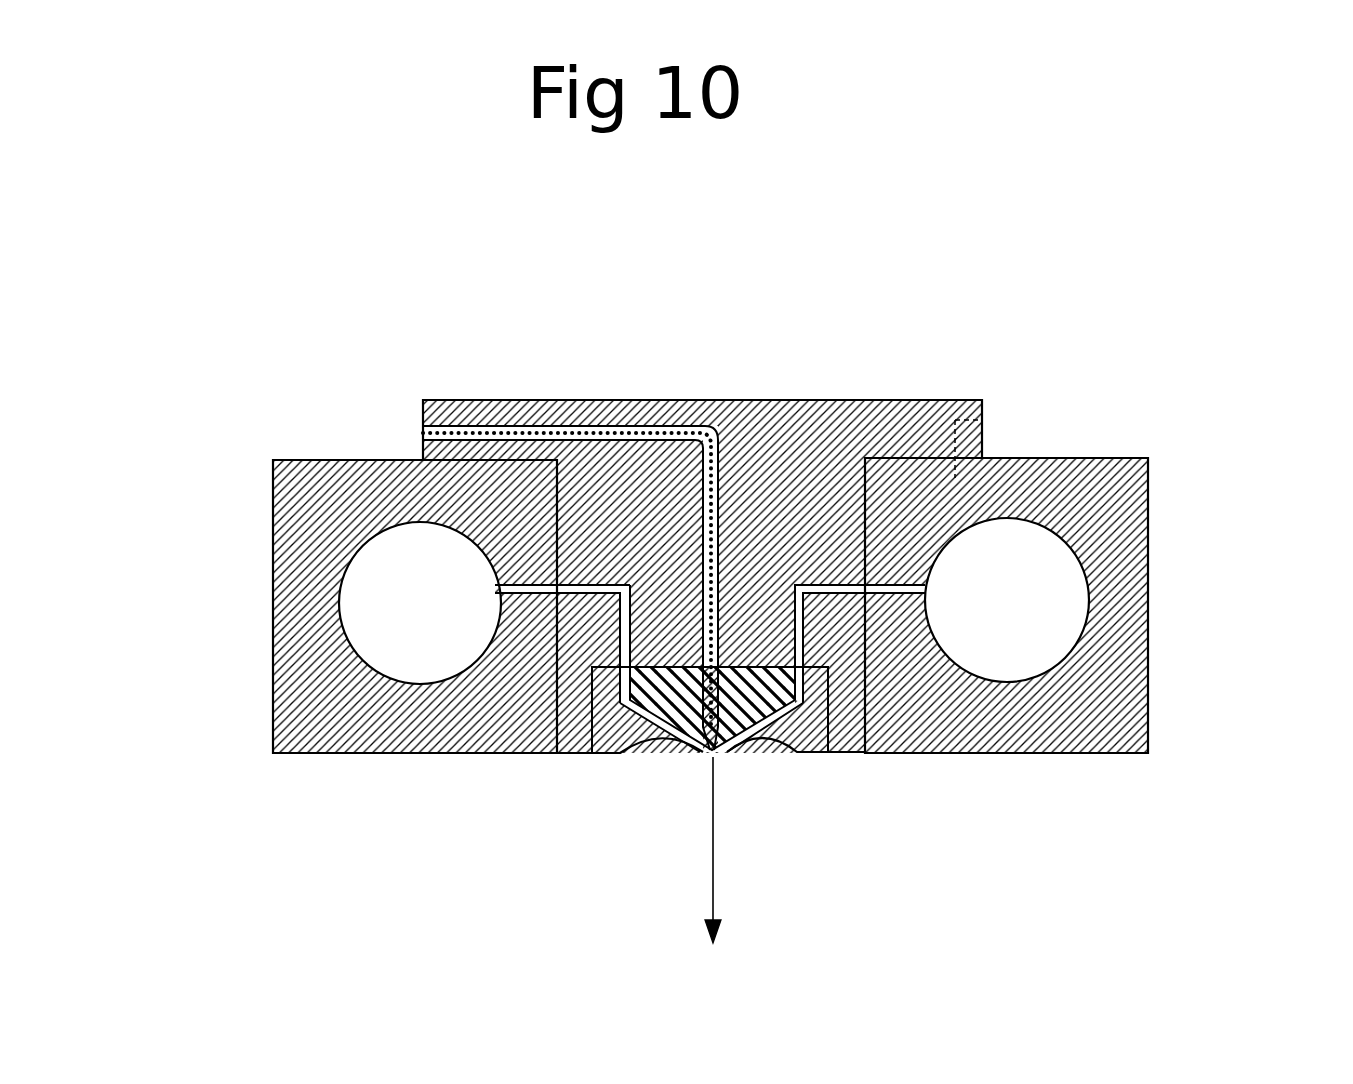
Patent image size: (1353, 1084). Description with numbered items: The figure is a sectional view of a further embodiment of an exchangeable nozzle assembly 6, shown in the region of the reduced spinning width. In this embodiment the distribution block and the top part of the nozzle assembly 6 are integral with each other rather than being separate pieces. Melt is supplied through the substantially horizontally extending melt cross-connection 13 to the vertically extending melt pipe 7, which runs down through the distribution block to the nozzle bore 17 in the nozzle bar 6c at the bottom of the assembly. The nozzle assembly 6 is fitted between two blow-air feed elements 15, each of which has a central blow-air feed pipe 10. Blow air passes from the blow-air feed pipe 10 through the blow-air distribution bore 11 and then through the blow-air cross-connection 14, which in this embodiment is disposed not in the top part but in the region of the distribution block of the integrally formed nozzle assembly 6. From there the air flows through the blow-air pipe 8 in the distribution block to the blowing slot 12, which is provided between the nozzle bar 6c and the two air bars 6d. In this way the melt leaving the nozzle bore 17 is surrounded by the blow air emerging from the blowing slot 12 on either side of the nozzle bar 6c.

The nozzle assembly 6 is at (790, 388).
The nozzle bar 6c is at (867, 753).
The air bar 6d is at (597, 755).
The melt pipe 7 is at (720, 573).
The blow-air pipe 8 is at (627, 598).
The blow-air feed pipe 10 is at (1032, 580).
The blow-air distribution bore 11 is at (497, 590).
The blowing slot 12 is at (750, 715).
The melt cross-connection 13 is at (563, 433).
The blow-air cross-connection 14 is at (810, 587).
The blow-air feed element 15 is at (396, 727).
The nozzle bore 17 is at (707, 750).